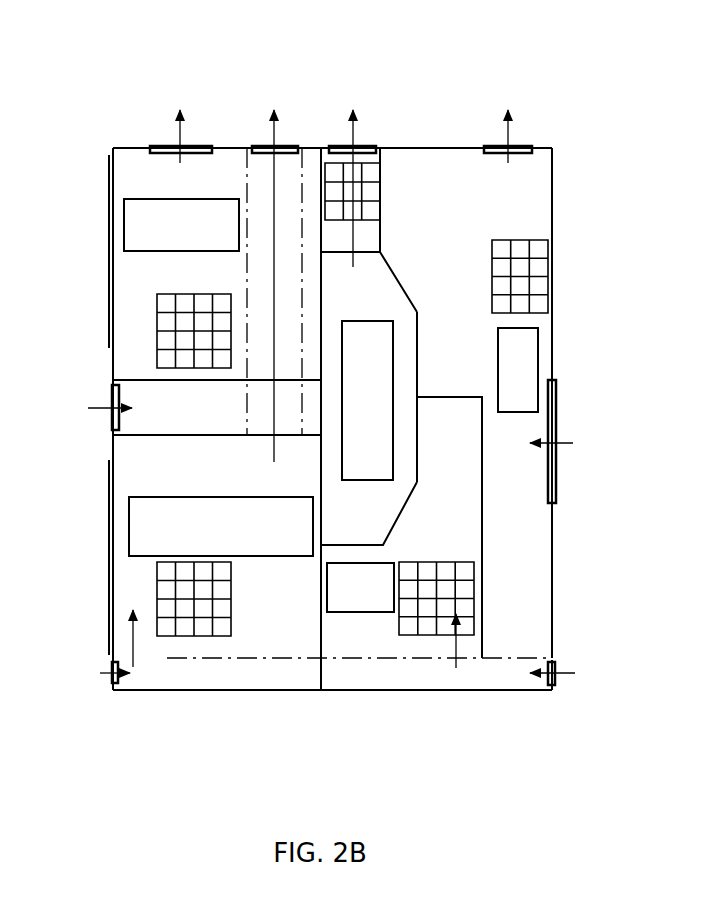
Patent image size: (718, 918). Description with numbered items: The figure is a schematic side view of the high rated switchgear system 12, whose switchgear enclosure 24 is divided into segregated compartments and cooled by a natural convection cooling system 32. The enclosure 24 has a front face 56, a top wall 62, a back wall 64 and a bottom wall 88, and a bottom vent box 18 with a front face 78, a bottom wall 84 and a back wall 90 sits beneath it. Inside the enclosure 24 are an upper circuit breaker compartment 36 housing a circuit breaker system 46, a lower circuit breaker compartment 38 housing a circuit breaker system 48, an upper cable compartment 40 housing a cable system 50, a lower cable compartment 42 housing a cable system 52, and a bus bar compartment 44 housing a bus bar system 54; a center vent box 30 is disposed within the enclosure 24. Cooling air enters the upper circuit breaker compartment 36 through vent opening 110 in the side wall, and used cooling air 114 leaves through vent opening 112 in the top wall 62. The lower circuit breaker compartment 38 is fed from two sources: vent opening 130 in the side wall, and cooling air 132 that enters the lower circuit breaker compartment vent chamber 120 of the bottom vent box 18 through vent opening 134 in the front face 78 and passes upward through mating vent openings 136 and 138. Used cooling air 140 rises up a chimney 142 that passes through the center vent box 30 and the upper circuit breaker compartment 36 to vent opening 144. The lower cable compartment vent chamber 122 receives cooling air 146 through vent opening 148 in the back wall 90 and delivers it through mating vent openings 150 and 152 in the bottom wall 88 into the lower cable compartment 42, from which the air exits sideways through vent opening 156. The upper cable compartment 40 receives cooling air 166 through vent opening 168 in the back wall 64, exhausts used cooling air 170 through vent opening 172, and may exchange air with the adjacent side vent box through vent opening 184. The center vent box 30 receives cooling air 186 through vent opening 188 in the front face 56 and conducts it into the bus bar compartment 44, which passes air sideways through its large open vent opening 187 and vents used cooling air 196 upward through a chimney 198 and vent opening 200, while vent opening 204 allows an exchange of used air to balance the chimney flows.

The high rated switchgear system 12 is at (599, 100).
The bottom vent box 18 is at (347, 708).
The switchgear enclosure 24 is at (643, 177).
The center vent box 30 is at (192, 421).
The cooling system 32 is at (81, 761).
The upper circuit breaker compartment 36 is at (137, 277).
The lower circuit breaker compartment 38 is at (192, 476).
The upper cable compartment 40 is at (435, 310).
The lower cable compartment 42 is at (435, 451).
The bus bar compartment 44 is at (344, 519).
The circuit breaker system 46 is at (160, 199).
The circuit breaker system 48 is at (148, 497).
The cable system 50 is at (539, 352).
The cable system 52 is at (340, 562).
The bus bar system 54 is at (398, 291).
The front face 56 is at (110, 451).
The top wall 62 is at (438, 146).
The back wall 64 is at (553, 565).
The front face 78 is at (113, 692).
The bottom wall 84 is at (398, 692).
The bottom wall 88 is at (305, 657).
The back wall 90 is at (553, 692).
The vent opening 110 is at (221, 294).
The vent opening 112 is at (157, 146).
The used cooling air 114 is at (186, 127).
The lower circuit breaker compartment vent chamber 120 is at (223, 692).
The lower cable compartment vent chamber 122 is at (480, 692).
The vent opening 130 is at (232, 568).
The cooling air 132 is at (118, 663).
The vent opening 134 is at (110, 680).
The vent opening 136 is at (201, 674).
The vent opening 138 is at (249, 653).
The used cooling air 140 is at (277, 127).
The chimney 142 is at (303, 300).
The vent opening 144 is at (258, 146).
The cooling air 146 is at (557, 665).
The vent opening 148 is at (557, 678).
The vent opening 150 is at (342, 677).
The vent opening 152 is at (404, 647).
The vent opening 156 is at (443, 561).
The cooling air 166 is at (566, 440).
The vent opening 168 is at (557, 485).
The used cooling air 170 is at (497, 127).
The vent opening 172 is at (528, 146).
The vent opening 184 is at (520, 240).
The cooling air 186 is at (96, 406).
The vent opening 187 is at (410, 352).
The vent opening 188 is at (110, 414).
The used cooling air 196 is at (357, 127).
The chimney 198 is at (368, 226).
The vent opening 200 is at (338, 146).
The vent opening 204 is at (384, 176).